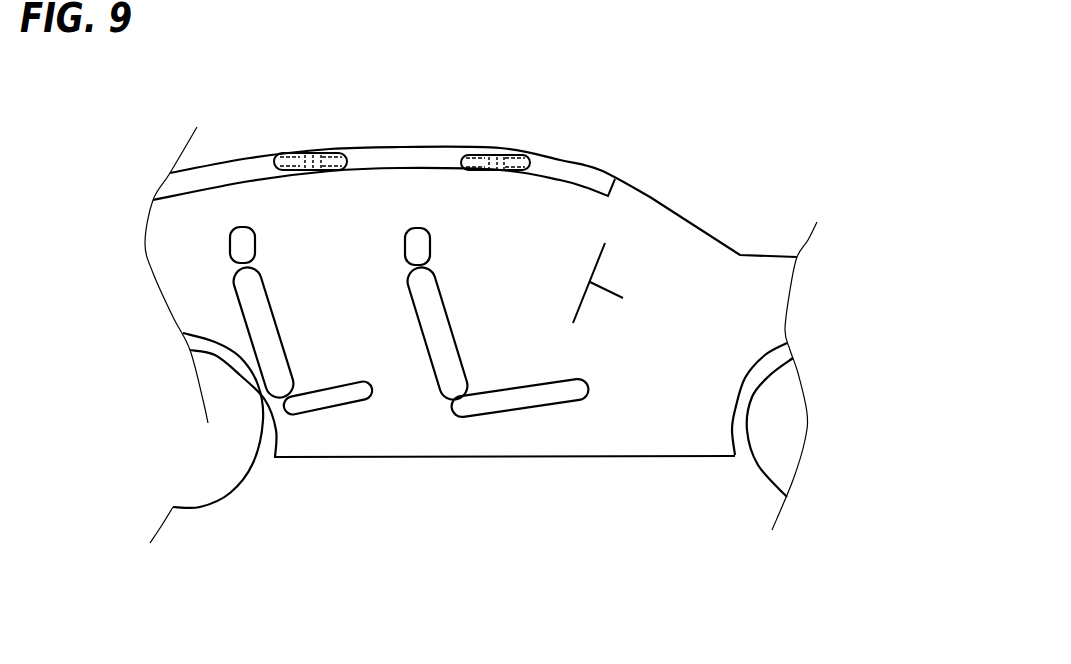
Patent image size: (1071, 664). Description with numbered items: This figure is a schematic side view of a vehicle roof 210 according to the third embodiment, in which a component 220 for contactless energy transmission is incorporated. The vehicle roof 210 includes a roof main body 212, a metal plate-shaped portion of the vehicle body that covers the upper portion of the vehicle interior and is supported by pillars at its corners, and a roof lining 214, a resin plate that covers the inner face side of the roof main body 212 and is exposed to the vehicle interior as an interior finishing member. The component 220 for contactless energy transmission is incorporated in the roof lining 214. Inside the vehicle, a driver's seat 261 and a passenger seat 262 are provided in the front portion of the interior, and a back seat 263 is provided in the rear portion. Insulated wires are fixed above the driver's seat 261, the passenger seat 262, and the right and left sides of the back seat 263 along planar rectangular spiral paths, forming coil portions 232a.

The vehicle roof 210 is at (424, 132).
The roof main body 212 is at (555, 153).
The roof lining 214 is at (592, 187).
The component for contactless energy transmission 220 is at (391, 111).
The coil portion 232a is at (288, 150).
The driver's seat 261 is at (504, 365).
The passenger seat 262 is at (531, 417).
The back seat 263 is at (330, 417).